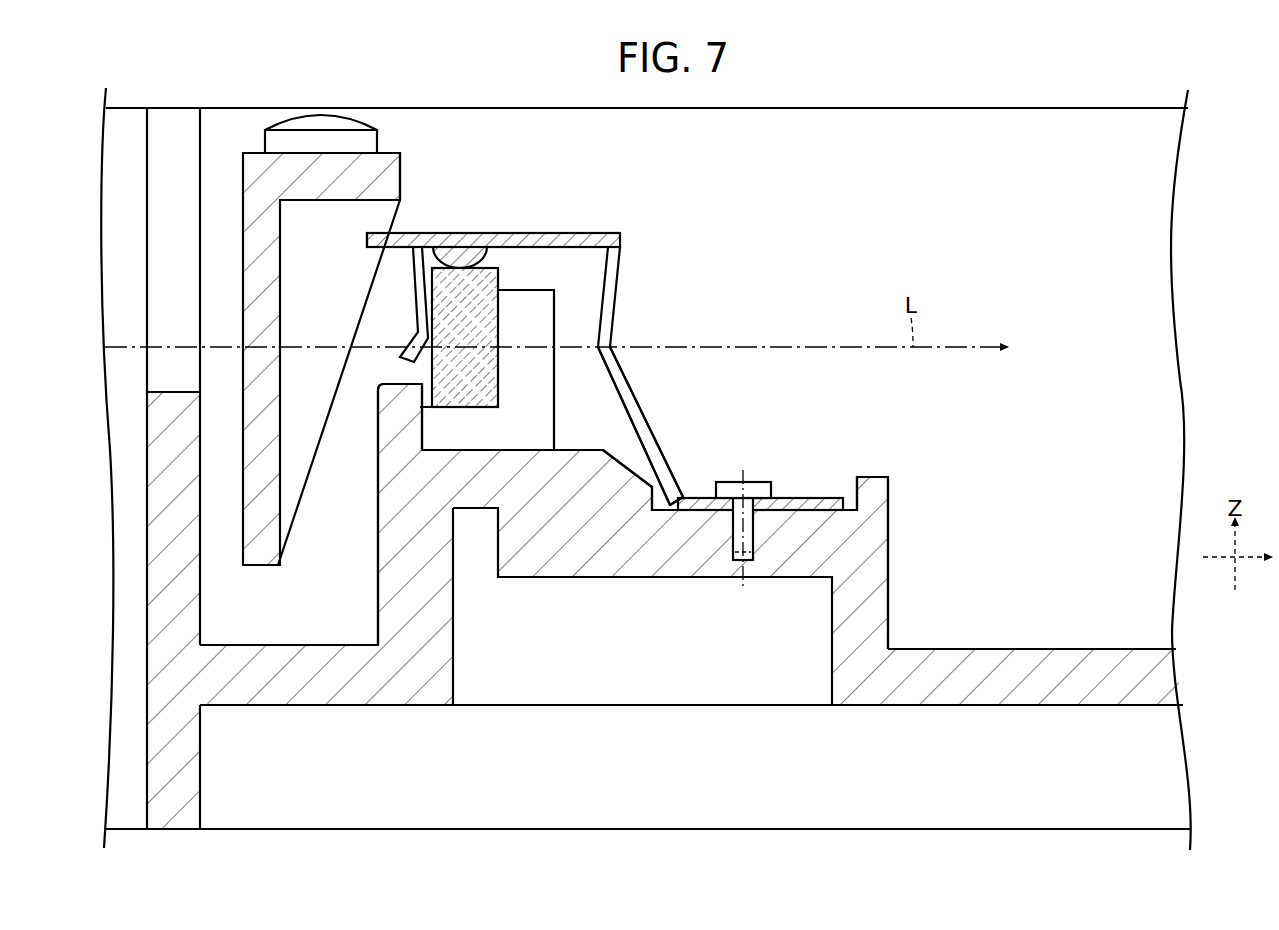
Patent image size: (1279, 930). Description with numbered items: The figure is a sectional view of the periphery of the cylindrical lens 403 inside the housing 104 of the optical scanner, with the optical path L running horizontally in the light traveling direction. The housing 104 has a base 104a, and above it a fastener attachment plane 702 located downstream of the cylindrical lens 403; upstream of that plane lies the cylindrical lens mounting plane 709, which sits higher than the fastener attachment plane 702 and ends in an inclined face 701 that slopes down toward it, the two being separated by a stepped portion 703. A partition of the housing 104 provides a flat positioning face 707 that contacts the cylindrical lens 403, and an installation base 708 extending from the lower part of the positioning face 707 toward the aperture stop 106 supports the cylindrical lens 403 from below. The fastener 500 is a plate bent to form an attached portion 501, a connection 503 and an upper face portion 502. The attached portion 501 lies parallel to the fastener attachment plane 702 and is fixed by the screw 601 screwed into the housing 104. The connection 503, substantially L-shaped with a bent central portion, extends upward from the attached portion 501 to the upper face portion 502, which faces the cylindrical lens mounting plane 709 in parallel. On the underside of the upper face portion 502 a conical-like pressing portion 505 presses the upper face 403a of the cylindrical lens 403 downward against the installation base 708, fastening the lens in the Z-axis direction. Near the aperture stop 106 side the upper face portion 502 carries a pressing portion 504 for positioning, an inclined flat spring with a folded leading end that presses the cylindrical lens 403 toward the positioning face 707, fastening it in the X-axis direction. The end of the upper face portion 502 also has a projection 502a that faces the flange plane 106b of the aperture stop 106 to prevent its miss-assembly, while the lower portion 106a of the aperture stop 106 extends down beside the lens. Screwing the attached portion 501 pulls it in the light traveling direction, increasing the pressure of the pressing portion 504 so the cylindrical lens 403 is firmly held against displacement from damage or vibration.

The housing 104 is at (665, 468).
The base 104a is at (1018, 648).
The aperture stop 106 is at (314, 342).
The lower end of lens holding frame 106a is at (259, 542).
The flange plane 106b is at (389, 165).
The cylindrical lens 403 is at (502, 303).
The upper face of the cylindrical lens 403a is at (492, 267).
The fastener 500 is at (579, 329).
The attached portion 501 is at (818, 497).
The upper face portion 502 is at (593, 238).
The projection 502a is at (413, 240).
The connection 503 is at (620, 380).
The pressing portion for positioning 504 is at (415, 297).
The pressing portion for fastening 505 is at (460, 265).
The screw 601 is at (757, 480).
The inclined face 701 is at (640, 465).
The fastener attachment plane 702 is at (848, 503).
The stepped portion 703 is at (660, 498).
The positioning face 707 is at (490, 320).
The installation base 708 is at (417, 403).
The cylindrical lens mounting plane 709 is at (570, 452).